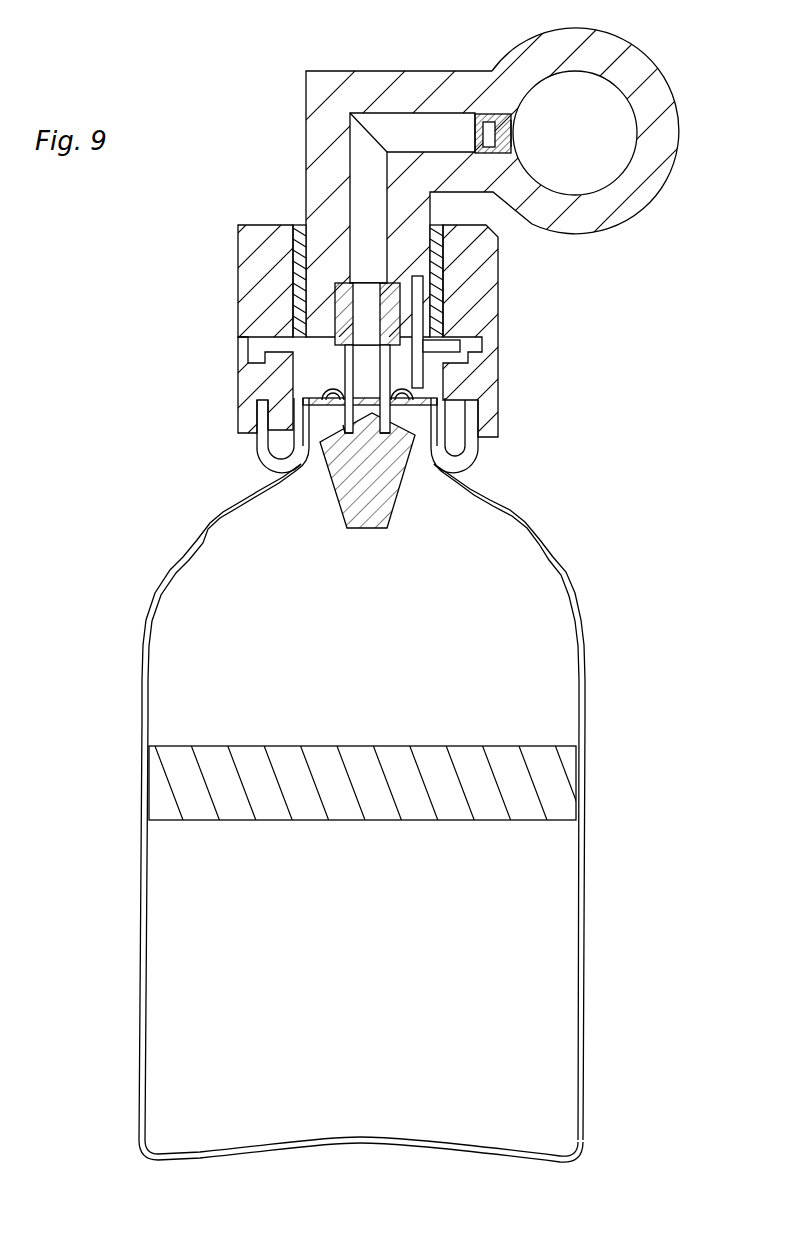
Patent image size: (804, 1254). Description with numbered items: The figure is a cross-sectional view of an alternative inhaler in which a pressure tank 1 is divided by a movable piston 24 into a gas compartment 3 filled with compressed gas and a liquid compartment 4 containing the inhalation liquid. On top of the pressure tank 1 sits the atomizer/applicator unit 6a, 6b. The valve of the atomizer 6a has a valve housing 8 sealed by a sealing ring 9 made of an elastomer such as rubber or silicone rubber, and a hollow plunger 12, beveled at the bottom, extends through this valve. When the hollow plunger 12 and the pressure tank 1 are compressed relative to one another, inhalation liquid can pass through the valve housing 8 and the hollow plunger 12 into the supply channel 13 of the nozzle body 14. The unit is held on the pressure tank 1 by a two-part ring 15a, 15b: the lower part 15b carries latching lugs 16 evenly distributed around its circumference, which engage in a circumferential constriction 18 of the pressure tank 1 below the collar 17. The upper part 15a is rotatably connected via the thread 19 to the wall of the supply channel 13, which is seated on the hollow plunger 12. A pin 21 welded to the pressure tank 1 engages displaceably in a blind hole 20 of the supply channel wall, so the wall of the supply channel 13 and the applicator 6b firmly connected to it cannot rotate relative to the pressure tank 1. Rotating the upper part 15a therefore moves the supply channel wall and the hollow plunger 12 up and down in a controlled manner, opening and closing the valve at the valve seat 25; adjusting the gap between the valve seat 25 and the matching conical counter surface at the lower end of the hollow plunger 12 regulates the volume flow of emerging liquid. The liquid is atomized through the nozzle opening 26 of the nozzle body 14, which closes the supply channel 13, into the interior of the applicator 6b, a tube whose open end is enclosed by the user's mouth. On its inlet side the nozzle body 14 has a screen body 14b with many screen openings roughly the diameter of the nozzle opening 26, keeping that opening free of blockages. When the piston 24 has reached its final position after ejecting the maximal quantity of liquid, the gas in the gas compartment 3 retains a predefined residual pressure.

The pressure tank 1 is at (523, 520).
The gas compartment 3 is at (203, 1011).
The liquid compartment 4 is at (306, 661).
The atomizer 6a is at (365, 72).
The applicator 6b is at (635, 200).
The valve housing 8 is at (372, 508).
The sealing ring 9 is at (380, 396).
The hollow plunger 12 is at (347, 366).
The supply channel 13 is at (378, 280).
The nozzle body 14 is at (492, 115).
The screen body 14b is at (474, 130).
The upper part of the ring 15a is at (262, 258).
The lower part of the ring 15b is at (245, 392).
The latching lugs 16 is at (463, 452).
The collar 17 is at (245, 431).
The circumferential constriction 18 is at (265, 470).
The thread 19 is at (293, 266).
The blind hole 20 is at (432, 294).
The pin 21 is at (423, 350).
The piston 24 is at (535, 773).
The valve seat 25 is at (353, 418).
The nozzle opening 26 is at (512, 131).